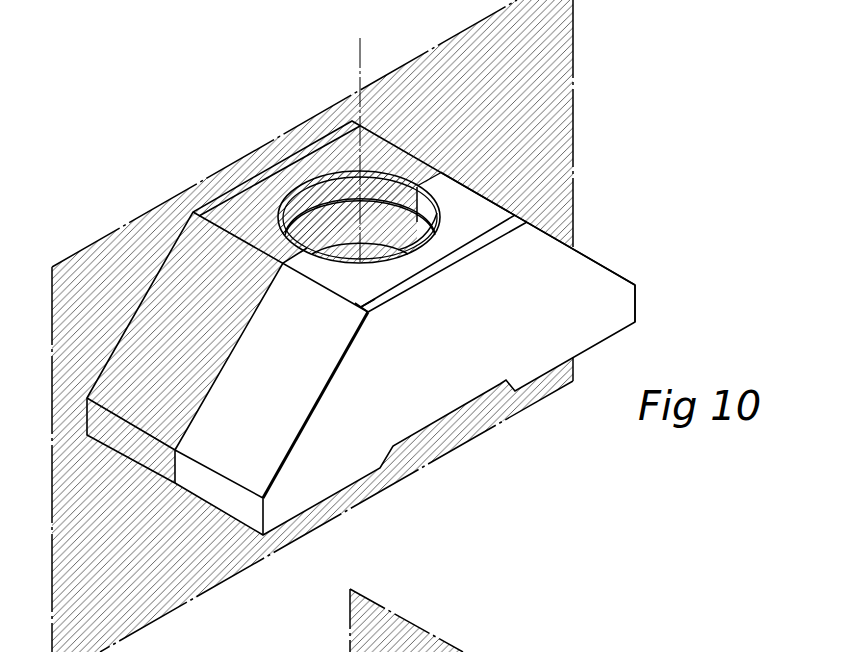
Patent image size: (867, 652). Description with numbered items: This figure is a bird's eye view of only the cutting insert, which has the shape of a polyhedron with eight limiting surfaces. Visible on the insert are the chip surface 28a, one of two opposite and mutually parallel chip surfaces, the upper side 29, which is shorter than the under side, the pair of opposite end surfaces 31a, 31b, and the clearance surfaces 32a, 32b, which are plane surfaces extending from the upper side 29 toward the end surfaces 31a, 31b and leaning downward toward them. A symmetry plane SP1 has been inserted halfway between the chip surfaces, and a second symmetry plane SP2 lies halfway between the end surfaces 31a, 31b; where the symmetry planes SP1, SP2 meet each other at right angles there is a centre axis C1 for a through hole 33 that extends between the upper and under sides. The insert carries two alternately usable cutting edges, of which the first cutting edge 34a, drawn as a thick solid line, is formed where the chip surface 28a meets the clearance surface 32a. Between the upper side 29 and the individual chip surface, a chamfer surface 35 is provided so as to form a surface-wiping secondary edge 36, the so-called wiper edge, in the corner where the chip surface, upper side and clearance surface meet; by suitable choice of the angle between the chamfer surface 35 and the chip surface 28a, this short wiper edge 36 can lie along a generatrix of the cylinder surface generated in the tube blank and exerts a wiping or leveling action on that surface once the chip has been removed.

The symmetry plane SP1 is at (97, 258).
The symmetry plane SP2 is at (503, 651).
The centre axis C1 is at (358, 68).
The chip surface 28a is at (471, 352).
The upper side 29 is at (381, 293).
The end surface 31a is at (245, 512).
The end surface 31b is at (637, 298).
The clearance surface 32a is at (294, 397).
The clearance surface 32b is at (603, 263).
The through hole 33 is at (430, 222).
The first cutting edge 34a is at (316, 407).
The chamfer surface 35 is at (282, 163).
The secondary edge 36 is at (362, 308).